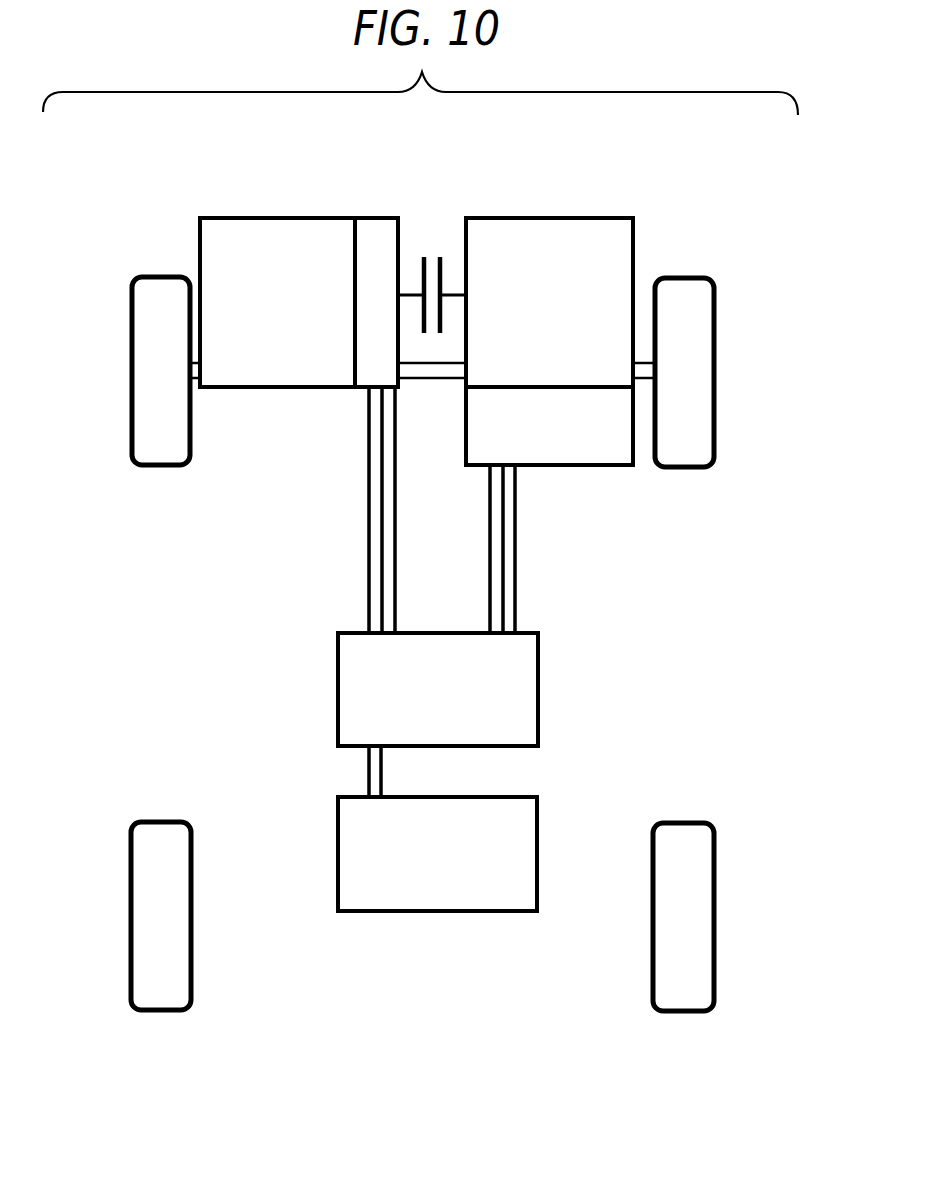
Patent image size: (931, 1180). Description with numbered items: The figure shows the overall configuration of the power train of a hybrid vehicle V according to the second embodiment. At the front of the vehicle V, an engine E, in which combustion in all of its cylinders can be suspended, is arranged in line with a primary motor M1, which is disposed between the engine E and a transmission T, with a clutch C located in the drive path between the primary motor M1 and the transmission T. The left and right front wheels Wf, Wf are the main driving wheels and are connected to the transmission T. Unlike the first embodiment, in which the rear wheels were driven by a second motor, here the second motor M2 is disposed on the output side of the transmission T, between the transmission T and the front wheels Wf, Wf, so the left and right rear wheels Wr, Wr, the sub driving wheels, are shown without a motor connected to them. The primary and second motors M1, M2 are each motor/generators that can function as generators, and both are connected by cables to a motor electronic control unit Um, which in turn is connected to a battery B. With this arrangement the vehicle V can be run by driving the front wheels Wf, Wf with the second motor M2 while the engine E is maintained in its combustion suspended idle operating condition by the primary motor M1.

The hybrid vehicle V is at (600, 641).
The engine E is at (272, 218).
The primary motor M1 is at (371, 218).
The clutch C is at (428, 256).
The transmission T is at (553, 218).
The second motor M2 is at (565, 465).
The front wheels Wf is at (131, 372).
The rear wheels Wr is at (131, 923).
The motor electronic control unit Um is at (538, 690).
The battery B is at (537, 855).